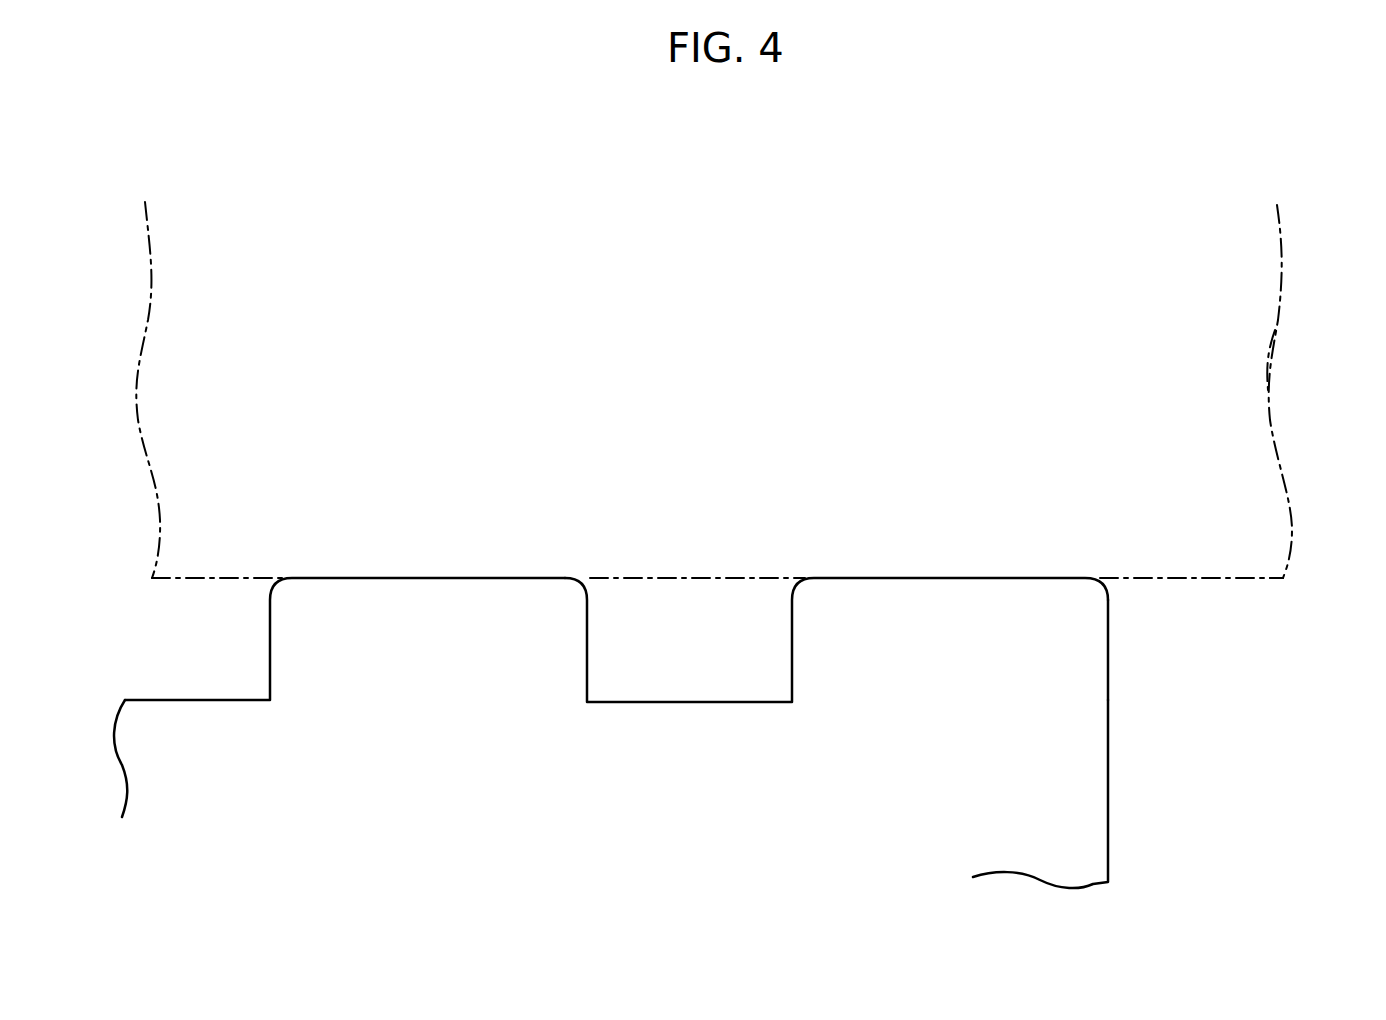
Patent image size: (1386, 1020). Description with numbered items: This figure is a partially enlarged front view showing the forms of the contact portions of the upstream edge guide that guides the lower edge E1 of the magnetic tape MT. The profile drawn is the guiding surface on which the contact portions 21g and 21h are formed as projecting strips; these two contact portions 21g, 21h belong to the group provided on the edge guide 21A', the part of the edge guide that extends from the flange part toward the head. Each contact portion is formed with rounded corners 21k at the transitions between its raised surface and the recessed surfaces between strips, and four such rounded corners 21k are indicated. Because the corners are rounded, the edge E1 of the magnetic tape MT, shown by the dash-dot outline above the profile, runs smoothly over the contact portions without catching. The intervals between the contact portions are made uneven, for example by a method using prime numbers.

The rounded corner 21k is at (275, 600).
The contact portion 21g is at (300, 632).
The contact portion 21h is at (1062, 631).
The edge guide 21A' is at (1100, 794).
The edge E1 is at (1271, 583).
The magnetic tape MT is at (1185, 372).